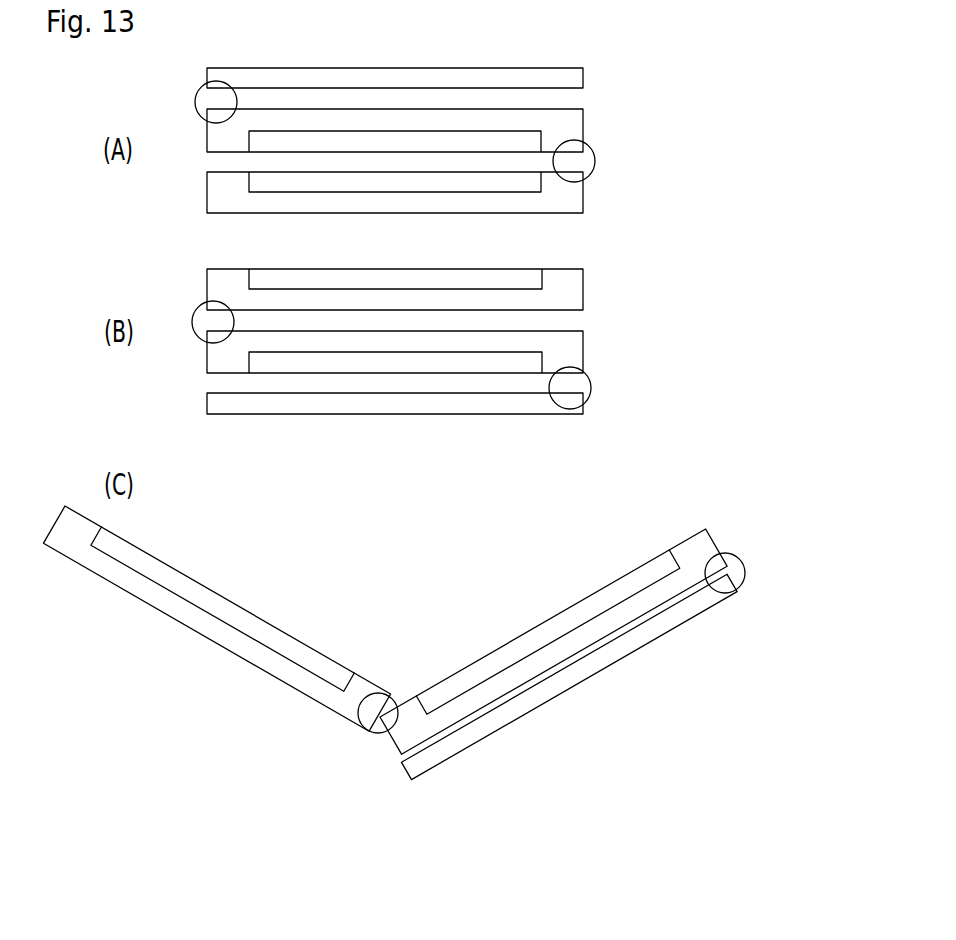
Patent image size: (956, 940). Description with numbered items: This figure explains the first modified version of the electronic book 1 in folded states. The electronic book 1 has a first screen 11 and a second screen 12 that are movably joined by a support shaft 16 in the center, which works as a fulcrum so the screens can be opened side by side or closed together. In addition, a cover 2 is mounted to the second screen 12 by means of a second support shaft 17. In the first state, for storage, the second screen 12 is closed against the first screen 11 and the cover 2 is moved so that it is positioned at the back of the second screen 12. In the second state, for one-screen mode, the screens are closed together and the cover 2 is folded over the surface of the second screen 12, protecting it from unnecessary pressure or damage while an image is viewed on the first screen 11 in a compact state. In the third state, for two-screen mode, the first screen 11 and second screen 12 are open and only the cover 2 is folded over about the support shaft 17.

The electronic book 1 is at (593, 67).
The cover 2 is at (468, 68).
The first screen 11 is at (362, 172).
The second screen 12 is at (438, 152).
The support shaft 16 is at (592, 168).
The support shaft 17 is at (203, 117).